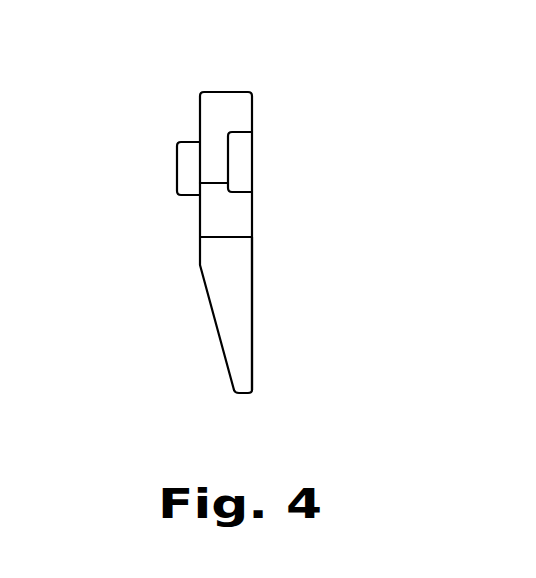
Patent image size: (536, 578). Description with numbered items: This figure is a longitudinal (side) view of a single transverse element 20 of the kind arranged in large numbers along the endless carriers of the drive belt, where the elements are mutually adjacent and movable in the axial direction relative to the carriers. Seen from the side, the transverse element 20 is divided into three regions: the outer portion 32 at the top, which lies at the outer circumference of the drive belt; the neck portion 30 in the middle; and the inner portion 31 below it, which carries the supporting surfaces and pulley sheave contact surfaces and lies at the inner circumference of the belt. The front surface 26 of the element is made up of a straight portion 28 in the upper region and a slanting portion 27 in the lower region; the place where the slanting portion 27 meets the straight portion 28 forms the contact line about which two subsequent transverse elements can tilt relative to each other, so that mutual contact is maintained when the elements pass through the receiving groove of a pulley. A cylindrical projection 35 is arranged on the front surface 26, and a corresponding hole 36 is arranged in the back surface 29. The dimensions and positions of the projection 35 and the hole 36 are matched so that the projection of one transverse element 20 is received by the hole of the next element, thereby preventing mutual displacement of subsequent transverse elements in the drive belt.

The transverse element 20 is at (180, 87).
The front surface 26 is at (200, 220).
The slanting portion 27 is at (220, 337).
The straight portion 28 is at (199, 124).
The back surface 29 is at (253, 293).
The neck portion 30 is at (242, 215).
The inner portion 31 is at (242, 348).
The outer portion 32 is at (242, 112).
The projection 35 is at (191, 165).
The hole 36 is at (242, 163).